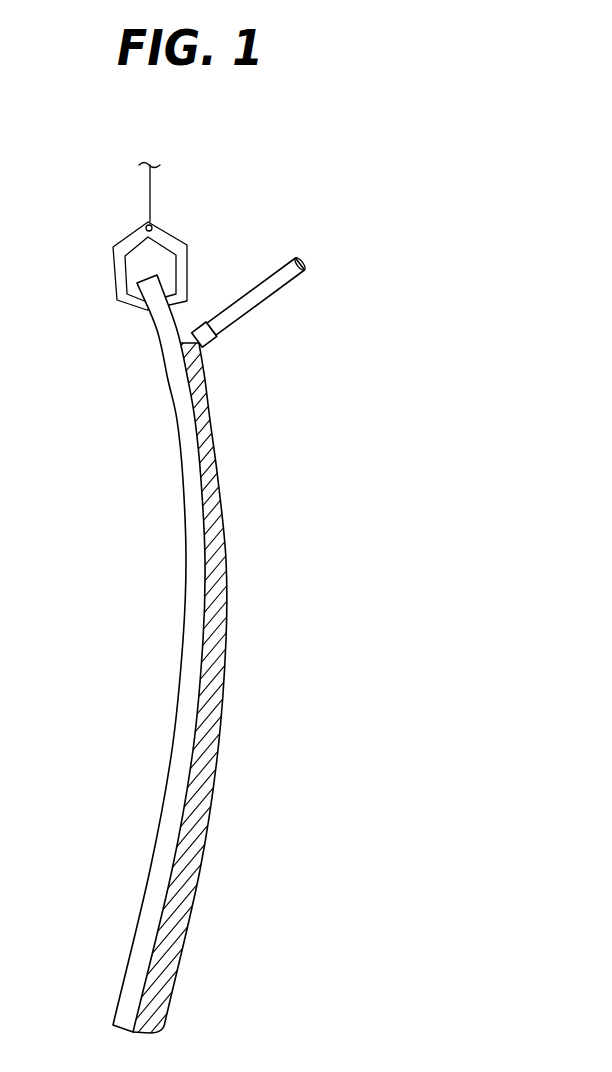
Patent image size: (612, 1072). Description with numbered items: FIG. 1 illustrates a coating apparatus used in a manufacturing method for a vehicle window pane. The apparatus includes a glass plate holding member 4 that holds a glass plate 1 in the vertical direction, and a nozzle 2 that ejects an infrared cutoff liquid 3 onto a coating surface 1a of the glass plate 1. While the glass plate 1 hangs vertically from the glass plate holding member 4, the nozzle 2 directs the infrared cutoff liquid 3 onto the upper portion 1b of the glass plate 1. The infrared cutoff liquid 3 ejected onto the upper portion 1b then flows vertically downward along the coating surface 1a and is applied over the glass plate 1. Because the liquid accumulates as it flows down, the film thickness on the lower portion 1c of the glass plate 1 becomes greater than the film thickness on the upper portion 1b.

The glass plate 1 is at (192, 545).
The coating surface 1a is at (182, 820).
The upper portion 1b is at (160, 327).
The lower portion 1c is at (122, 1010).
The nozzle 2 is at (262, 310).
The infrared cutoff liquid 3 is at (225, 662).
The glass plate holding member 4 is at (177, 240).